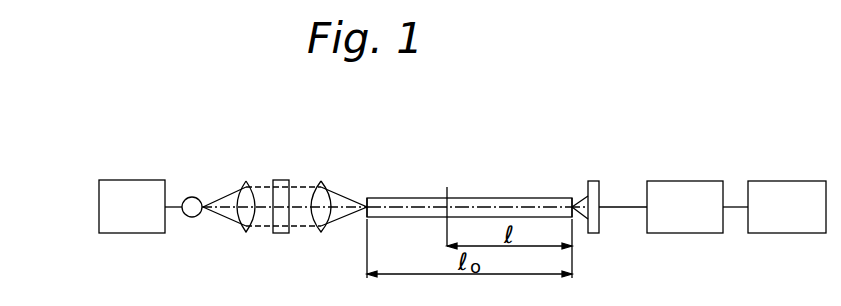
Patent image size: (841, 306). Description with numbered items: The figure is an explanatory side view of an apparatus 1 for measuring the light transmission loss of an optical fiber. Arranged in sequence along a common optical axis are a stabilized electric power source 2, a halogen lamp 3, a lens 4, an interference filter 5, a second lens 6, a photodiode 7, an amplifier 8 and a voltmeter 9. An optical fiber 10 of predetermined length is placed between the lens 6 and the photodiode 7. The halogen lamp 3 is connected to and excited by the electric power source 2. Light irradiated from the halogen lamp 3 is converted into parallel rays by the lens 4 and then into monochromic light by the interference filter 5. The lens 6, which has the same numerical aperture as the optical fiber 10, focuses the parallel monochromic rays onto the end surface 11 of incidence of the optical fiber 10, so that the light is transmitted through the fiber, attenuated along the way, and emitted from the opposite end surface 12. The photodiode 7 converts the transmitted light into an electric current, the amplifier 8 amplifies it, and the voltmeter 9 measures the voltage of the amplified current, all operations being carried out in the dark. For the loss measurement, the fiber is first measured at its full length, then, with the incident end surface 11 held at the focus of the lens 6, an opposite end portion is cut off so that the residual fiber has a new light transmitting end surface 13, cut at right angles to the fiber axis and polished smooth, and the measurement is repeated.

The apparatus for measuring light transmission loss 1 is at (390, 142).
The stabilized electric power source 2 is at (130, 180).
The halogen lamp 3 is at (192, 197).
The lens 4 is at (246, 181).
The interference filter 5 is at (282, 180).
The lens 6 is at (322, 181).
The photodiode 7 is at (596, 181).
The amplifier 8 is at (696, 181).
The voltmeter 9 is at (794, 181).
The optical fiber 10 is at (517, 198).
The end surface of incidence 11 is at (363, 218).
The opposite end surface 12 is at (577, 197).
The light transmitting end surface 13 is at (448, 188).